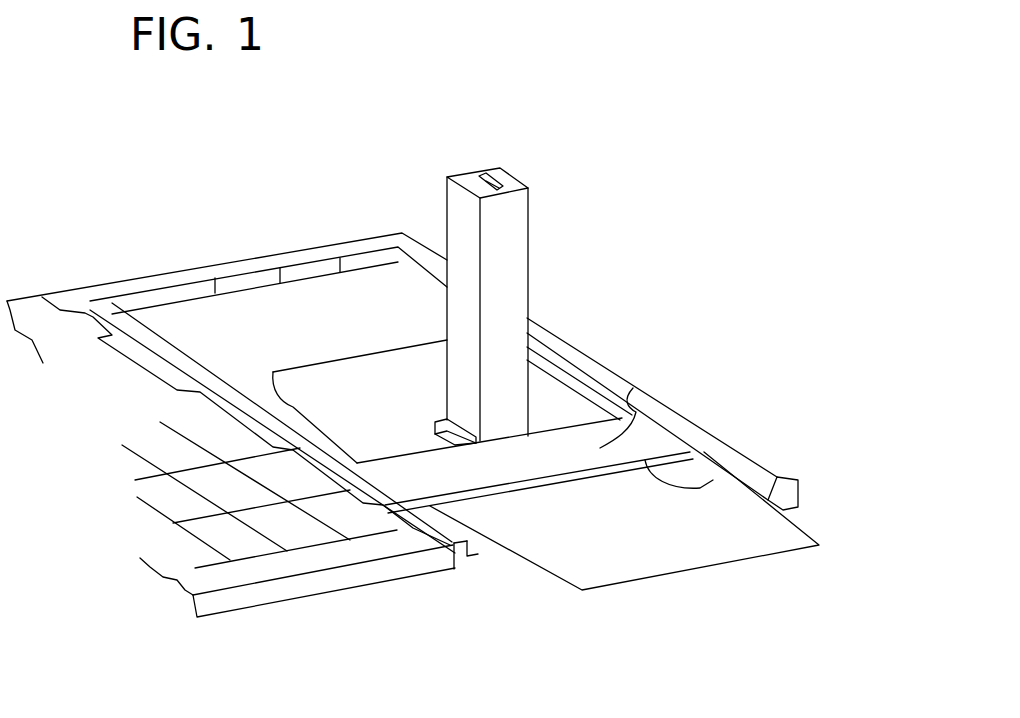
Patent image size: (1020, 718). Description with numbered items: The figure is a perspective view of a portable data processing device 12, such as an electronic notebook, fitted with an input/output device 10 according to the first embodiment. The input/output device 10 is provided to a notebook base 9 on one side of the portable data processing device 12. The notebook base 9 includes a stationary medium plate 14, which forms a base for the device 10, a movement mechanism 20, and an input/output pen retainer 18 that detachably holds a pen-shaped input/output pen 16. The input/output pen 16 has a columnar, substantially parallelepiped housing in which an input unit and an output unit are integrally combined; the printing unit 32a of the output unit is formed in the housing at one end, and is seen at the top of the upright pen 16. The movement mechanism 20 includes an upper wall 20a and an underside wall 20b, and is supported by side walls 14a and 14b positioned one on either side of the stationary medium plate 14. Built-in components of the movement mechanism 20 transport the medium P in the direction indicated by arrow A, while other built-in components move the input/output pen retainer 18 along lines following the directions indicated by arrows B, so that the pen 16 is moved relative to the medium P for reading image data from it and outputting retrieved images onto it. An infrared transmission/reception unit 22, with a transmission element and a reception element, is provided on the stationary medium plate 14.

The portable data processing device 12 is at (93, 266).
The stationary medium plate 14 is at (340, 297).
The side wall 14a is at (753, 457).
The side wall 14b is at (462, 550).
The infrared transmission/reception unit 22 is at (245, 283).
The input/output pen 16 is at (507, 257).
The printing unit 32a is at (497, 166).
The notebook base 9 is at (533, 320).
The input/output device 10 is at (628, 192).
The input/output pen retainer 18 is at (453, 433).
The movement mechanism 20 is at (632, 388).
The upper wall 20a is at (652, 440).
The underside wall 20b is at (780, 467).
The medium P is at (762, 528).
The arrows B is at (553, 443).
The arrow A is at (745, 617).